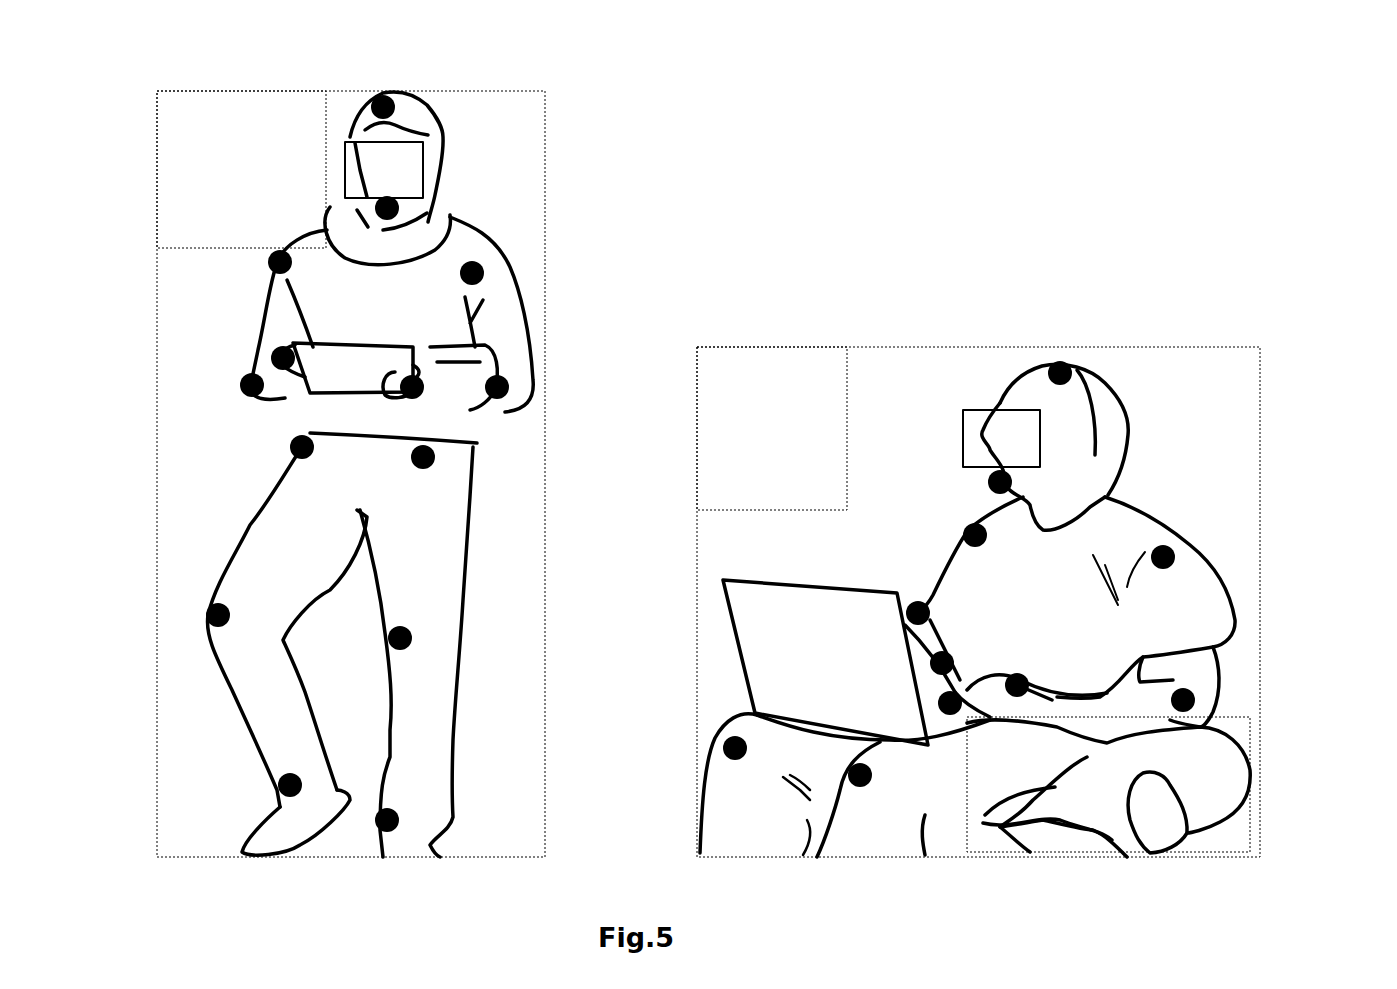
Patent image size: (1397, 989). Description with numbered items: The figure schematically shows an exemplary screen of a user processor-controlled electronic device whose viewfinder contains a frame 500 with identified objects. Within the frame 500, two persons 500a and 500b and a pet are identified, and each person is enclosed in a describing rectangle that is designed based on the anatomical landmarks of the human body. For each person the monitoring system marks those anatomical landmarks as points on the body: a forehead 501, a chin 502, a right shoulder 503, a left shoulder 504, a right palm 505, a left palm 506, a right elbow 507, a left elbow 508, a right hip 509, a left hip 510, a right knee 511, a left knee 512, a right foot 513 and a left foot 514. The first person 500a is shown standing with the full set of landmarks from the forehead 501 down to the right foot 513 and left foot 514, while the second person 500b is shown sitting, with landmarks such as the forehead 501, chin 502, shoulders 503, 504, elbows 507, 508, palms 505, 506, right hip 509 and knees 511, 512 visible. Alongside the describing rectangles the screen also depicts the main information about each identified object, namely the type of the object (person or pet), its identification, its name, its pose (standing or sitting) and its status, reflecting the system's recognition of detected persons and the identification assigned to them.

The frame 500 is at (986, 120).
The person 500a is at (490, 90).
The person 500b is at (1230, 347).
The forehead 501 is at (736, 240).
The chin 502 is at (693, 344).
The right shoulder 503 is at (508, 398).
The left shoulder 504 is at (905, 415).
The right palm 505 is at (588, 500).
The left palm 506 is at (735, 536).
The right elbow 507 is at (485, 499).
The left elbow 508 is at (910, 519).
The right hip 509 is at (540, 575).
The left hip 510 is at (477, 473).
The right knee 511 is at (373, 681).
The left knee 512 is at (673, 728).
The right foot 513 is at (187, 789).
The left foot 514 is at (465, 820).